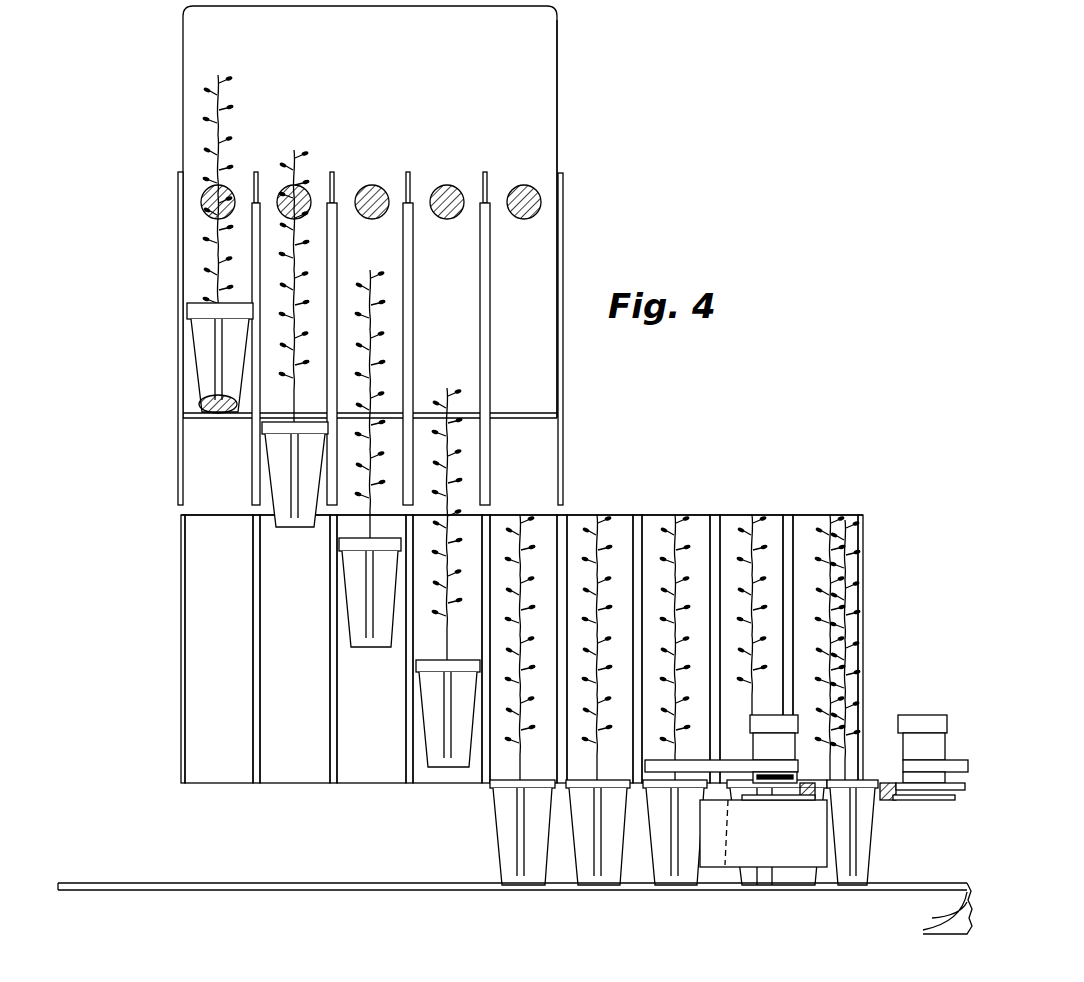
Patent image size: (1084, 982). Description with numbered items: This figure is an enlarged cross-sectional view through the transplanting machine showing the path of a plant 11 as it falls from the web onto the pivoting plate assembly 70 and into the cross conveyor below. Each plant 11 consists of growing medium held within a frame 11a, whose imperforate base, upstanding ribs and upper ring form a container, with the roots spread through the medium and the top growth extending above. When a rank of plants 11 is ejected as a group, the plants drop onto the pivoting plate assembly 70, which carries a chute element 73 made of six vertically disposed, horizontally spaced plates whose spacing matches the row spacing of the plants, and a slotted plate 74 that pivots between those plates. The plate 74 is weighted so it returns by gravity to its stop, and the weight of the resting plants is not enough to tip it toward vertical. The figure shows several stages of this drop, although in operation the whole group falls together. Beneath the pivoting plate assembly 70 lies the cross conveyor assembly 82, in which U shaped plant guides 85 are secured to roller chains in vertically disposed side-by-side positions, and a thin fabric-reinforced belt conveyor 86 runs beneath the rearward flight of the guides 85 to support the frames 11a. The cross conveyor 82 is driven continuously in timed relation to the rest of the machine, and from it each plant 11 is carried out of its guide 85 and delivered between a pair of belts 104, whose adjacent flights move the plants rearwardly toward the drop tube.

The plant 11 is at (200, 115).
The frame 11a is at (215, 412).
The pivoting plate assembly 70 is at (505, 138).
The plate 74 is at (557, 153).
The chute element 73 is at (563, 453).
The cross conveyor assembly 82 is at (790, 505).
The U shaped plant guide 85 is at (365, 772).
The belt conveyor 86 is at (365, 885).
The belt 104 is at (810, 800).